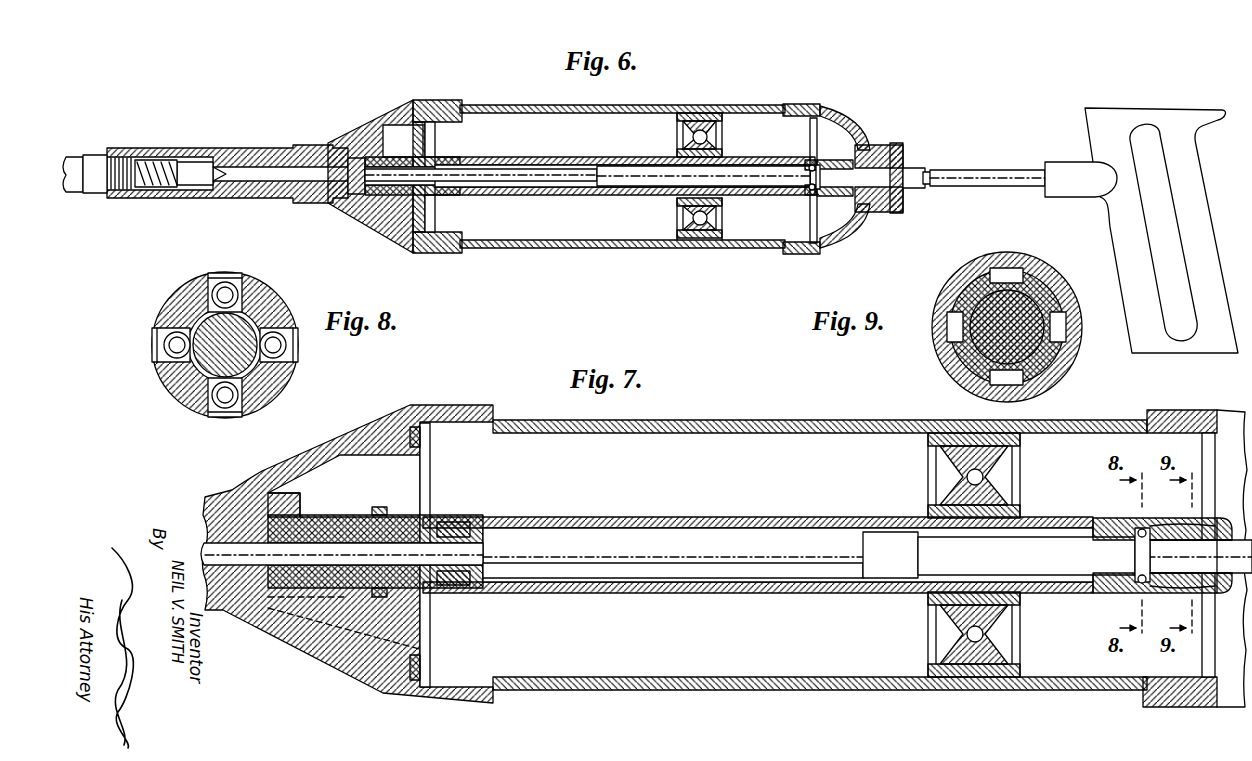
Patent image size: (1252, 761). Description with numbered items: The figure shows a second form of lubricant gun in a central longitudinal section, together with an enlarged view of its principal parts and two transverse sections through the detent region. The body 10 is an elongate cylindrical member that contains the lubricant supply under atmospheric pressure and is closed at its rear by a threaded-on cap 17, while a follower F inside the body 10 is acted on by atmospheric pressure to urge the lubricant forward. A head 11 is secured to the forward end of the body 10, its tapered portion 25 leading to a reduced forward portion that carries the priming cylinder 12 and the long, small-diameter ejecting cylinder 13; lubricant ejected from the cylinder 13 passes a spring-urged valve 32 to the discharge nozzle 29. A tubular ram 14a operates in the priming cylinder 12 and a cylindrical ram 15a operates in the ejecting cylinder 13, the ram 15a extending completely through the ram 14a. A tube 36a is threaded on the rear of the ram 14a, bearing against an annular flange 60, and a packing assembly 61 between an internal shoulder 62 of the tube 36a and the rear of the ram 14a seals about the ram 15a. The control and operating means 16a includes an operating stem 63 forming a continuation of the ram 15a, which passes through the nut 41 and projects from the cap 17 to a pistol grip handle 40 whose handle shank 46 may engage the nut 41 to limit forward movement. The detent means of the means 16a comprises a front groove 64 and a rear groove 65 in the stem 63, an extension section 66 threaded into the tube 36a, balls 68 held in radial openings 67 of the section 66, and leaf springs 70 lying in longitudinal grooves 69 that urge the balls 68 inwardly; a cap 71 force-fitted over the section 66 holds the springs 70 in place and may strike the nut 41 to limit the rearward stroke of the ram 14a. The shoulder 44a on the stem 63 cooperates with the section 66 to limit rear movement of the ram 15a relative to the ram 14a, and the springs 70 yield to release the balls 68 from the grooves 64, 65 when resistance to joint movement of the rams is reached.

In FIG. 6, the body 10 is at (668, 105).
In FIG. 7, the body 10 is at (694, 419).
In FIG. 6, the head 11 is at (371, 121).
In FIG. 7, the head 11 is at (360, 430).
In FIG. 6, the priming cylinder 12 is at (353, 158).
In FIG. 7, the priming cylinder 12 is at (272, 492).
In FIG. 6, the ejecting cylinder 13 is at (300, 152).
In FIG. 7, the ejecting cylinder 13 is at (224, 545).
In FIG. 6, the ram 14a is at (412, 157).
In FIG. 7, the ram 14a is at (318, 580).
In FIG. 6, the ram 15a is at (505, 172).
In FIG. 7, the ram 15a is at (330, 540).
In FIG. 6, the control and operating means 16a is at (806, 160).
In FIG. 7, the control and operating means 16a is at (1118, 517).
In FIG. 6, the cap 17 is at (848, 118).
In FIG. 6, the tapered portion 25 is at (420, 108).
In FIG. 6, the discharge nozzle 29 is at (71, 157).
In FIG. 6, the valve 32 is at (221, 168).
In FIG. 7, the tube 36a is at (790, 517).
In FIG. 6, the pistol grip handle 40 is at (1108, 218).
In FIG. 6, the nut 41 is at (894, 148).
In FIG. 7, the shoulder 44a is at (878, 531).
In FIG. 6, the handle shank 46 is at (1060, 166).
In FIG. 7, the annular flange 60 is at (382, 506).
In FIG. 7, the packing assembly 61 is at (458, 521).
In FIG. 7, the internal shoulder 62 is at (460, 586).
In FIG. 6, the operating stem 63 is at (977, 175).
In FIG. 8, the operating stem 63 is at (216, 352).
In FIG. 9, the operating stem 63 is at (958, 345).
In FIG. 7, the operating stem 63 is at (828, 545).
In FIG. 6, the front groove 64 is at (797, 177).
In FIG. 7, the front groove 64 is at (921, 551).
In FIG. 6, the rear groove 65 is at (926, 170).
In FIG. 8, the rear groove 65 is at (252, 318).
In FIG. 7, the rear groove 65 is at (1136, 553).
In FIG. 6, the extension section 66 is at (808, 192).
In FIG. 8, the extension section 66 is at (246, 292).
In FIG. 9, the extension section 66 is at (962, 376).
In FIG. 7, the extension section 66 is at (1120, 582).
In FIG. 8, the radial openings 67 is at (214, 397).
In FIG. 6, the balls 68 is at (819, 196).
In FIG. 8, the balls 68 is at (170, 347).
In FIG. 7, the longitudinal grooves 69 is at (1162, 521).
In FIG. 8, the leaf springs 70 is at (158, 340).
In FIG. 9, the leaf springs 70 is at (1066, 340).
In FIG. 7, the leaf springs 70 is at (1172, 588).
In FIG. 6, the cap 71 is at (833, 162).
In FIG. 9, the cap 71 is at (956, 352).
In FIG. 7, the cap 71 is at (1226, 520).
In FIG. 6, the follower F is at (702, 112).
In FIG. 7, the follower F is at (940, 612).